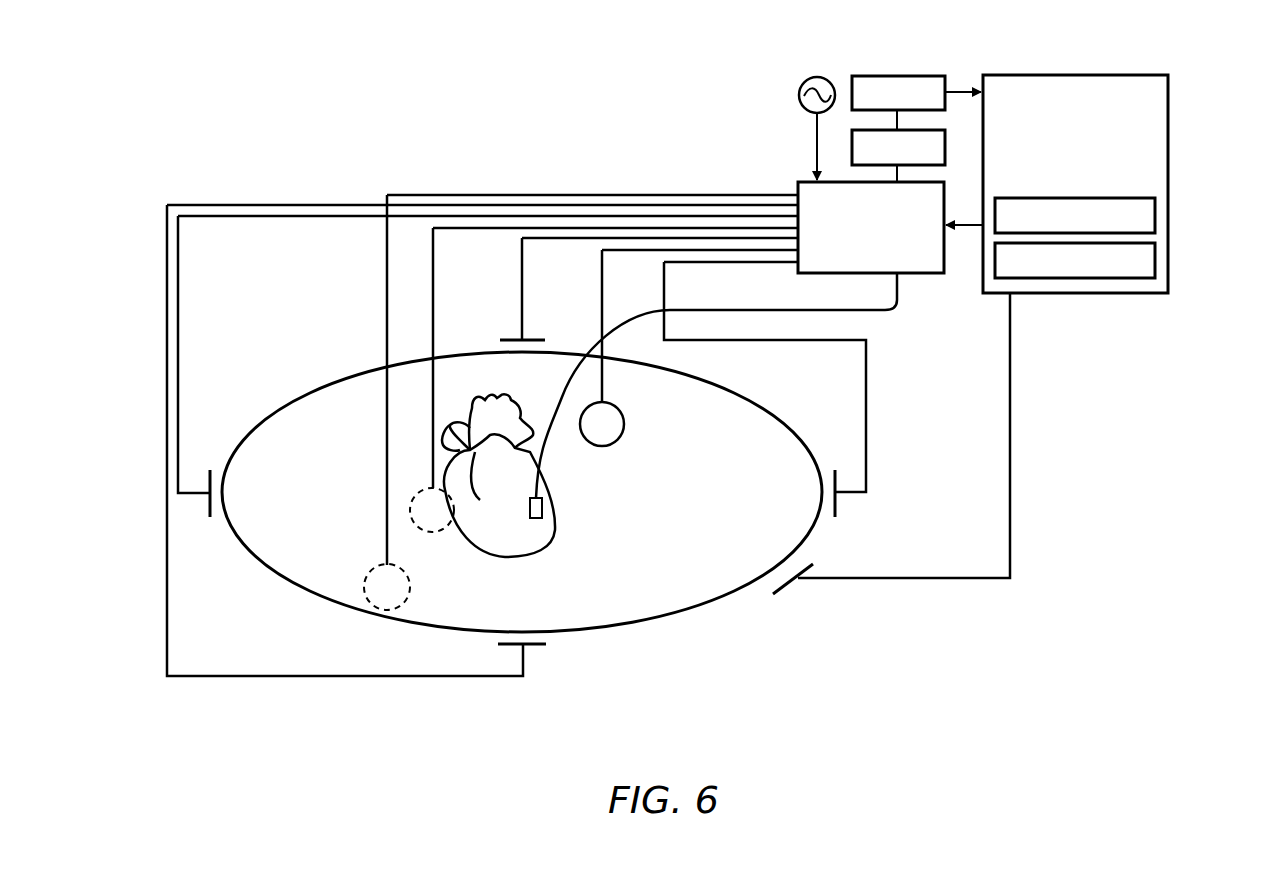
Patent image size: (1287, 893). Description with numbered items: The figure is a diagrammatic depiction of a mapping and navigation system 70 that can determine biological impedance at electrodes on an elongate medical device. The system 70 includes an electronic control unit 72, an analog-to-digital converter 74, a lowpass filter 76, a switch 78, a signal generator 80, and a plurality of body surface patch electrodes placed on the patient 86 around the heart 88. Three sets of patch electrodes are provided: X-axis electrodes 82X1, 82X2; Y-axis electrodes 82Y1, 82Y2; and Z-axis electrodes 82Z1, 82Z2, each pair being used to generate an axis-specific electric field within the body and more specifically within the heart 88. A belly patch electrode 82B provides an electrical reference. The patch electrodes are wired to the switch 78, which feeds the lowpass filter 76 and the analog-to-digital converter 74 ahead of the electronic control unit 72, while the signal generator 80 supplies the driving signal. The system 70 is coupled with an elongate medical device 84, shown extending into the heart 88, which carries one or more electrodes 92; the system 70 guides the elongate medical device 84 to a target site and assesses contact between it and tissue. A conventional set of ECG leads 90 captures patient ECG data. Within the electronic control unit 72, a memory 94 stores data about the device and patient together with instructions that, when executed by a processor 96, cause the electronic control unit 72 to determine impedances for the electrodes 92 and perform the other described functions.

The mapping and navigation system 70 is at (440, 95).
The electronic control unit 72 is at (1168, 108).
The analog-to-digital converter 74 is at (898, 76).
The lowpass filter 76 is at (852, 148).
The switch 78 is at (871, 227).
The signal generator 80 is at (800, 88).
The X-axis body surface patch electrode 82X1 is at (208, 506).
The X-axis body surface patch electrode 82X2 is at (837, 506).
The Y-axis body surface patch electrode 82Y1 is at (603, 380).
The Y-axis body surface patch electrode 82Y2 is at (433, 412).
The Z-axis body surface patch electrode 82Z1 is at (515, 339).
The Z-axis body surface patch electrode 82Z2 is at (530, 645).
The belly patch electrode 82B is at (387, 500).
The elongate medical device 84 is at (897, 312).
The patient 86 is at (745, 397).
The heart 88 is at (552, 489).
The ECG leads 90 is at (1010, 435).
The electrodes 92 is at (542, 508).
The memory 94 is at (1155, 216).
The processor 96 is at (1155, 260).